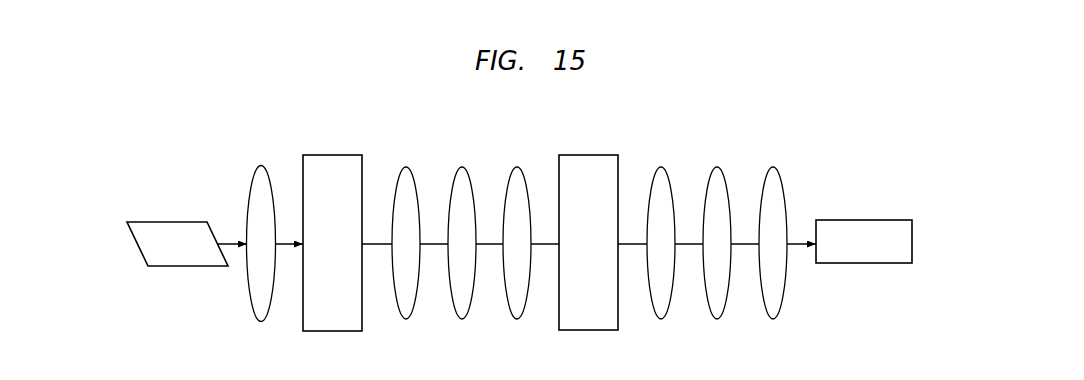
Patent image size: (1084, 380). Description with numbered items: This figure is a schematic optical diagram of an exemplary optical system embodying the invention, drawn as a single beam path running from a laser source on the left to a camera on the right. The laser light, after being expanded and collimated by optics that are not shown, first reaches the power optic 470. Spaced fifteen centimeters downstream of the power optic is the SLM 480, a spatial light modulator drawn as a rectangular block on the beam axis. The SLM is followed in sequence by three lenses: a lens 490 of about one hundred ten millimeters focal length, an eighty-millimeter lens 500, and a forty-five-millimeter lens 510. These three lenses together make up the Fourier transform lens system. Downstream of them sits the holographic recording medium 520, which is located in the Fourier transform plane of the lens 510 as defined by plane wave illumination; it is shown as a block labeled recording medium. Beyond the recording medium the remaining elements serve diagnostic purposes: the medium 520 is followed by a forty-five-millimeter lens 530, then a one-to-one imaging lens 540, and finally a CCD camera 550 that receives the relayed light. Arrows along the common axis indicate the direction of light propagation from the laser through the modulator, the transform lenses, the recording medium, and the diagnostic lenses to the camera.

The power optic 470 is at (263, 166).
The SLM 480 is at (316, 331).
The 110.2-mm lens 490 is at (408, 167).
The 80-mm lens 500 is at (464, 167).
The 45 mm lens 510 is at (519, 167).
The holographic recording medium 520 is at (186, 222).
The 45-mm lens 530 is at (719, 167).
The one-to-one imaging lens 540 is at (775, 167).
The CCD camera 550 is at (870, 264).